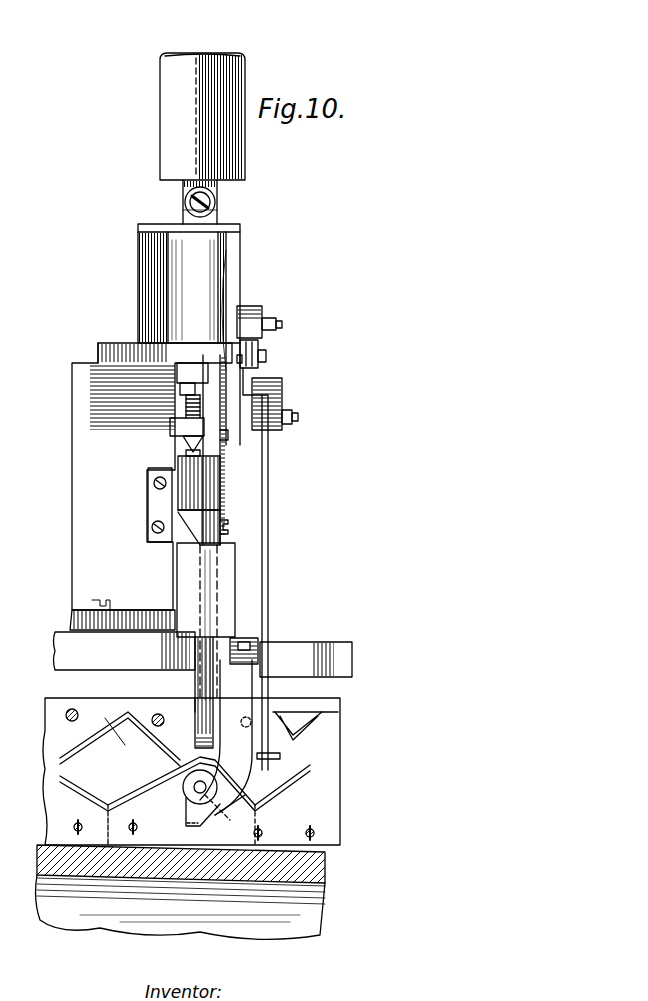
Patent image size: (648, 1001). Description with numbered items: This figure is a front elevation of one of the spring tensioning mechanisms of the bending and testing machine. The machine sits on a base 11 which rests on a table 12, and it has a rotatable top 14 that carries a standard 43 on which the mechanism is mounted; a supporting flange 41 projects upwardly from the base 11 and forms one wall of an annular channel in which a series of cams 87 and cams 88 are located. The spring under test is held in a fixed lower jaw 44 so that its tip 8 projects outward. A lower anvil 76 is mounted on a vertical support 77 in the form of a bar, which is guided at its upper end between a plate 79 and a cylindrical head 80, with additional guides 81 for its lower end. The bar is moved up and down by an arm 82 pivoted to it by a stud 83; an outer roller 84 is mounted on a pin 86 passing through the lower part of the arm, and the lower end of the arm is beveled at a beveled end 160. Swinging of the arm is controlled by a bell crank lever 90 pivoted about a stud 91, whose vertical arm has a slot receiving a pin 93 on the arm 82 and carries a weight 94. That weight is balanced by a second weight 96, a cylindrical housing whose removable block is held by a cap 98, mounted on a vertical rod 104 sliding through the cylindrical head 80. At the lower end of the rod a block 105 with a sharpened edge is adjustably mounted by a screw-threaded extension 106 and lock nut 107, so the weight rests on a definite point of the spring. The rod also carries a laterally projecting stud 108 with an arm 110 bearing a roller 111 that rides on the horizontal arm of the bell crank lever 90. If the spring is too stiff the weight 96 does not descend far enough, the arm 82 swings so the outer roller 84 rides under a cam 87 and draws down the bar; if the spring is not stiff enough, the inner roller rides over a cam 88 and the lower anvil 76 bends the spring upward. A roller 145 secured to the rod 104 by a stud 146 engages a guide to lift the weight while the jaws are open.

The tip 8 is at (185, 452).
The base 11 is at (80, 855).
The table 12 is at (122, 905).
The rotatable top 14 is at (320, 650).
The supporting flange 41 is at (55, 772).
The standard 43 is at (96, 492).
The fixed lower jaw 44 is at (205, 478).
The lower anvil 76 is at (212, 520).
The vertical support 77 is at (214, 446).
The plate 79 is at (152, 224).
The cylindrical head 80 is at (195, 278).
The additional guides 81 is at (228, 580).
The arm 82 is at (245, 700).
The stud 83 is at (252, 648).
The outer roller 84 is at (210, 803).
The pin 86 is at (197, 788).
The cam 87 is at (98, 726).
The cam 88 is at (100, 800).
The bell crank lever 90 is at (262, 394).
The stud 91 is at (254, 356).
The pin 93 is at (270, 760).
The weight 94 is at (280, 402).
The second weight 96 is at (163, 132).
The cap 98 is at (229, 53).
The vertical rod 104 is at (220, 208).
The block 105 is at (178, 428).
The screw-threaded extension 106 is at (190, 406).
The lock nut 107 is at (182, 388).
The stud 108 is at (282, 324).
The arm 110 is at (262, 308).
The roller 111 is at (266, 358).
The roller 145 is at (217, 198).
The stud 146 is at (232, 180).
The beveled end 160 is at (206, 818).